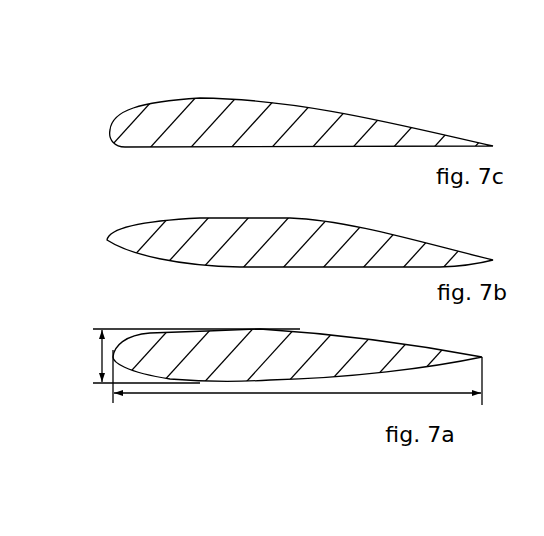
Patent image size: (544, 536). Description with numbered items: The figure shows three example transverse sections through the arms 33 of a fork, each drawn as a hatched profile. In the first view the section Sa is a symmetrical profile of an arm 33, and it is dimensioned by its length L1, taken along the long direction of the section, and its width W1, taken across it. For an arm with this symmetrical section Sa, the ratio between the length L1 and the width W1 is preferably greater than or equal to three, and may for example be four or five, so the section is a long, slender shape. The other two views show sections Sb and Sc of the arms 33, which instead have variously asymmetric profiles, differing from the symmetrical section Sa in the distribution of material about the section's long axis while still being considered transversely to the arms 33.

In FIG. 7C, the arms 33 is at (217, 97).
In FIG. 7B, the arms 33 is at (312, 218).
In FIG. 7A, the arms 33 is at (318, 329).
In FIG. 7A, the section Sa is at (382, 355).
In FIG. 7B, the section Sb is at (356, 243).
In FIG. 7C, the section Sc is at (310, 120).
In FIG. 7A, the width W1 is at (100, 355).
In FIG. 7A, the length L1 is at (178, 394).